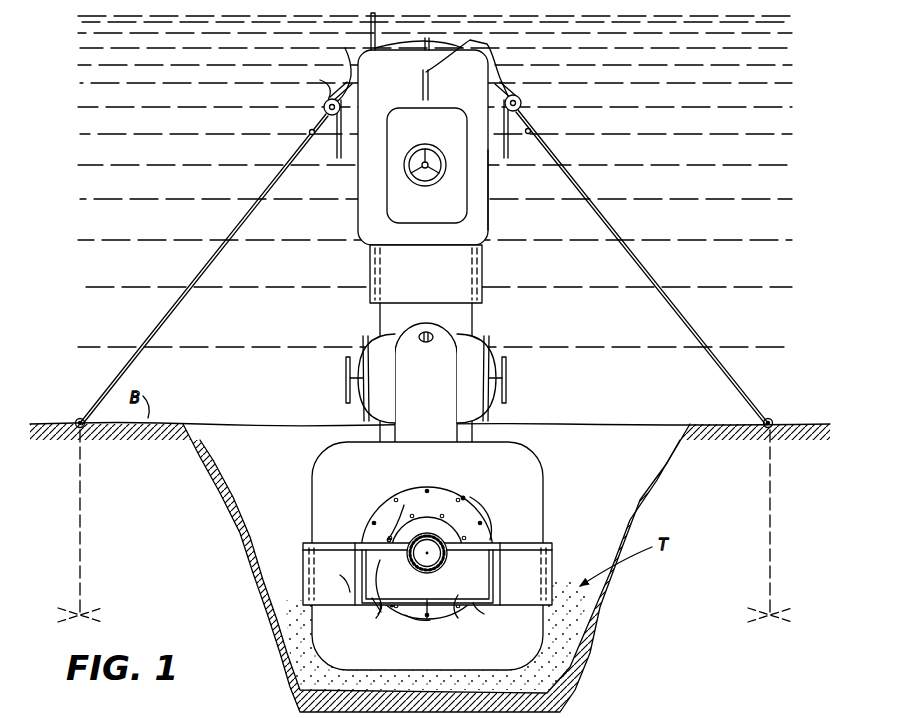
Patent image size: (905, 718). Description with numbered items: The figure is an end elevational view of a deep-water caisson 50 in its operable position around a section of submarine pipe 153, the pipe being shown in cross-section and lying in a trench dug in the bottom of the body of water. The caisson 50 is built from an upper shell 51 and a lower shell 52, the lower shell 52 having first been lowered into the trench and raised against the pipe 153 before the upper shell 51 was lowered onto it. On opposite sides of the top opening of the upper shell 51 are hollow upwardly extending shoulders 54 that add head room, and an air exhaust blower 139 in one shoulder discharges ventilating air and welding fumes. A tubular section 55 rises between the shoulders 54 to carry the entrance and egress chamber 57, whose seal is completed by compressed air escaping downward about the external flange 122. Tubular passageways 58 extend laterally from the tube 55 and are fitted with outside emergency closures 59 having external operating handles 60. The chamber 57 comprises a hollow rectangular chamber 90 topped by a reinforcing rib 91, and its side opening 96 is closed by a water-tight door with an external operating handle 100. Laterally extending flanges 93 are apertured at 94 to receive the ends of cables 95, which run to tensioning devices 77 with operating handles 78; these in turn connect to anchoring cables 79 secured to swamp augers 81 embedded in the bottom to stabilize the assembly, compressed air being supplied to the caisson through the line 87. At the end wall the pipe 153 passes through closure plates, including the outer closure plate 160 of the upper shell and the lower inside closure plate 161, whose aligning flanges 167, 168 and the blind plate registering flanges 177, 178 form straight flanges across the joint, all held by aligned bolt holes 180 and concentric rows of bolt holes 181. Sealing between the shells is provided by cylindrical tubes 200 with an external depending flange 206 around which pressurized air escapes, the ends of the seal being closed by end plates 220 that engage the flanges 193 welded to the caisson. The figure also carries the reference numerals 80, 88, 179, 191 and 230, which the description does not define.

The caisson 50 is at (420, 552).
The upper shell 51 is at (312, 484).
The lower shell 52 is at (318, 603).
The hollow upwardly extending shoulders 54 is at (455, 367).
The tubular section 55 is at (380, 316).
The entrance and egress chamber 57 is at (418, 133).
The tubular passageways 58 is at (363, 340).
The outside emergency closures 59 is at (368, 352).
The external operating handles 60 is at (346, 375).
The tensioning devices 77 is at (336, 130).
The operating handles 78 is at (324, 106).
The anchoring cables 79 is at (192, 282).
The anchor eye 80 is at (78, 415).
The swamp augers 81 is at (78, 512).
The air supply line 87 is at (377, 34).
The cable 88 is at (421, 43).
The hollow rectangular chamber 90 is at (490, 190).
The reinforcing rib 91 is at (440, 43).
The laterally extending flanges 93 is at (466, 42).
The apertures 94 is at (345, 85).
The cables 95 is at (314, 86).
The side opening 96 is at (453, 110).
The external operating handle 100 is at (426, 144).
The external flange 122 is at (483, 266).
The air exhaust blower 139 is at (430, 343).
The pipe 153 is at (430, 532).
The outer closure plate 160 is at (386, 540).
The lower inside closure plate 161 is at (458, 614).
The aligning flange 167 is at (370, 546).
The aligning flange 168 is at (384, 614).
The registering flange 177 is at (487, 510).
The registering flange 178 is at (420, 622).
The rim bottom 179 is at (427, 624).
The aligned bolt holes 180 is at (398, 508).
The concentric rows of bolt holes 181 is at (418, 490).
The foot 191 is at (378, 614).
The flanges 193 is at (368, 606).
The cylindrical tubes 200 is at (330, 545).
The external depending flange 206 is at (424, 555).
The end plates 220 is at (346, 582).
The hub ring 230 is at (450, 538).